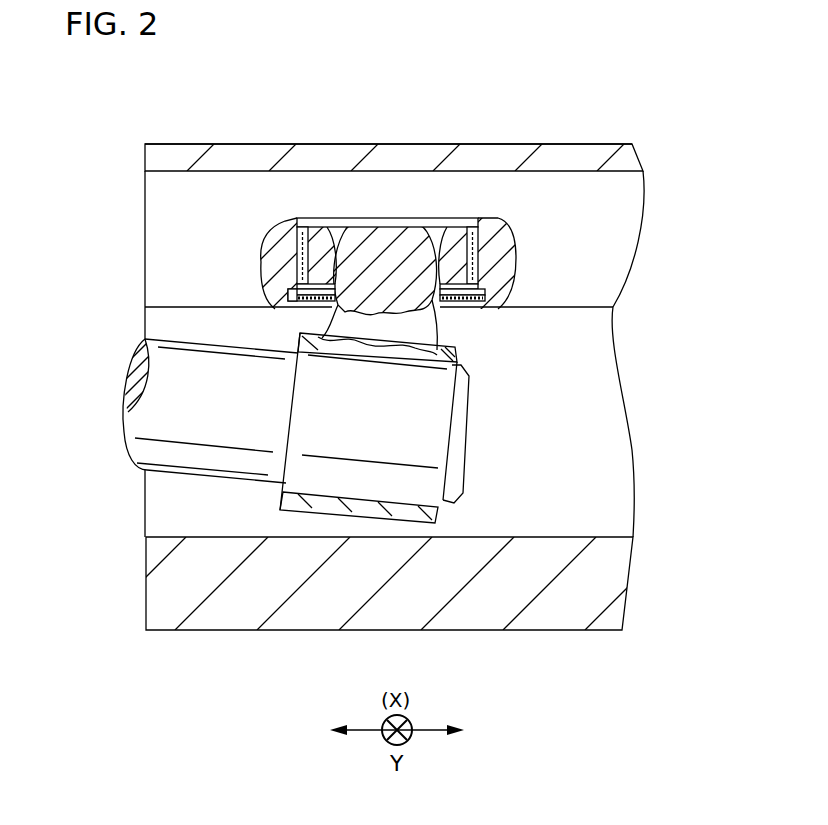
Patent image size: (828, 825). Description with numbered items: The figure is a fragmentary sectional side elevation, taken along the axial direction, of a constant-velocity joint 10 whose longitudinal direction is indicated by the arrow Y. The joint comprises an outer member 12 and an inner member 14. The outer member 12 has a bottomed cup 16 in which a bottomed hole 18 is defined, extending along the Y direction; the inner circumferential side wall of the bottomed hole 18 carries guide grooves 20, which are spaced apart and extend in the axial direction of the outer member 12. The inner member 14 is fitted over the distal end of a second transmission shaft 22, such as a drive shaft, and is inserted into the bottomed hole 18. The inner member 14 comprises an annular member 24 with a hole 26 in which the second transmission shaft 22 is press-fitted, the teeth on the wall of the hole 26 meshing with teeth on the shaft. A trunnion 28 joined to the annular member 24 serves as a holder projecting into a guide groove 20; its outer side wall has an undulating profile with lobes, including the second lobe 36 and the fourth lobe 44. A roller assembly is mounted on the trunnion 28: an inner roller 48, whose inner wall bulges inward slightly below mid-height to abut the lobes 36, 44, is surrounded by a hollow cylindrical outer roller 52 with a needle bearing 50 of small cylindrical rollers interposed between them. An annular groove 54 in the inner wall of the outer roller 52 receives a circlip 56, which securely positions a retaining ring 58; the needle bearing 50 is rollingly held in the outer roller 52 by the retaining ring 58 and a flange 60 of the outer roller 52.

The constant-velocity joint 10 is at (184, 128).
The outer member 12 is at (461, 614).
The inner member 14 is at (301, 522).
The bottomed cup 16 is at (623, 540).
The bottomed hole 18 is at (616, 358).
The guide groove 20 is at (540, 179).
The second transmission shaft 22 is at (202, 457).
The annular member 24 is at (366, 460).
The hole 26 is at (343, 493).
The trunnion 28 is at (383, 247).
The second lobe 36 is at (472, 254).
The fourth lobe 44 is at (315, 250).
The inner roller 48 is at (453, 275).
The needle bearing 50 is at (301, 240).
The outer roller 52 is at (497, 248).
The annular groove 54 is at (293, 303).
The circlip 56 is at (486, 298).
The retaining ring 58 is at (474, 280).
The flange 60 is at (303, 220).